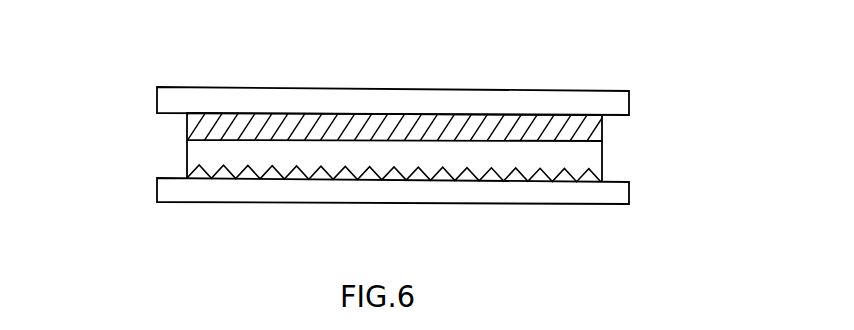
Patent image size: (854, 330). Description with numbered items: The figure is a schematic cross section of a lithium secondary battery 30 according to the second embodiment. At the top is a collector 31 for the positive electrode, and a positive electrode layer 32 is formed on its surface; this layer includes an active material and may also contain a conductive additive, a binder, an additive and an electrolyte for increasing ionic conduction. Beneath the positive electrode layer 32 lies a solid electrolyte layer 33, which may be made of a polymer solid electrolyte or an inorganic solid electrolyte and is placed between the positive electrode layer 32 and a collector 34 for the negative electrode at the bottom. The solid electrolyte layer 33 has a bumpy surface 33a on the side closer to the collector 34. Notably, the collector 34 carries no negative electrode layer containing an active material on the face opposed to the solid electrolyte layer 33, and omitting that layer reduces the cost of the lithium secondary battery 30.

The lithium secondary battery 30 is at (146, 170).
The collector for a positive electrode 31 is at (552, 100).
The positive electrode layer 32 is at (570, 130).
The solid electrolyte layer 33 is at (397, 153).
The bumpy surface 33a is at (222, 167).
The collector for a negative electrode 34 is at (577, 192).